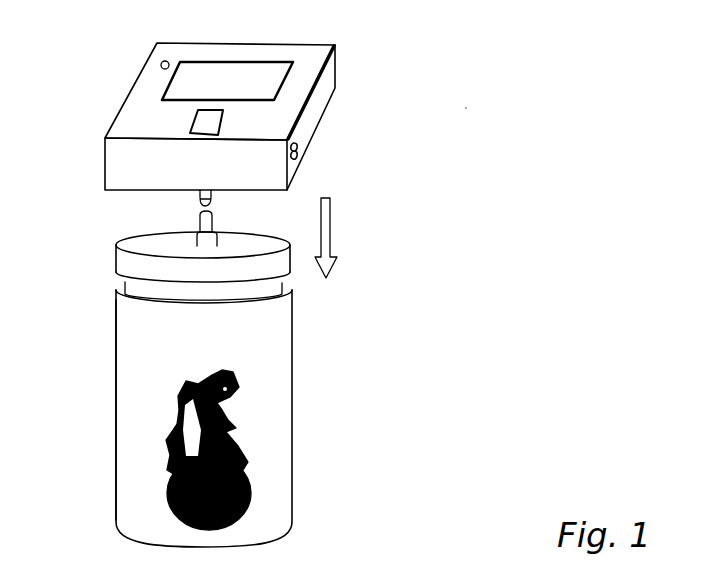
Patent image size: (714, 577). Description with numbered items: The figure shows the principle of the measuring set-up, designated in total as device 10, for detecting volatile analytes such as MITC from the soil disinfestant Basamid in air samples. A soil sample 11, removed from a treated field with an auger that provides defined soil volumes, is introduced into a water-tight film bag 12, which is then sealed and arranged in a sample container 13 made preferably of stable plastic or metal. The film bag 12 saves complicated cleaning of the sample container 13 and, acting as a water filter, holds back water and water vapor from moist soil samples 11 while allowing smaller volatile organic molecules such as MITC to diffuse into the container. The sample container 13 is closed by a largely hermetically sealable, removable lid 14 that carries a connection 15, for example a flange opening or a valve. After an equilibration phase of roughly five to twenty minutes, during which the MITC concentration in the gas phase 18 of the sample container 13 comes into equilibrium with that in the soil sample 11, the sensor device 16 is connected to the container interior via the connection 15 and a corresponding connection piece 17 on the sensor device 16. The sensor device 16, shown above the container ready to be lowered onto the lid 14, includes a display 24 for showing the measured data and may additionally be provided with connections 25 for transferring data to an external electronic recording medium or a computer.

The device for the detection of volatile analytes 10 is at (467, 106).
The soil sample 11 is at (250, 502).
The film bag 12 is at (232, 450).
The sample container 13 is at (292, 368).
The lid 14 is at (127, 263).
The connection 15 is at (212, 222).
The sensor device 16 is at (135, 110).
The connection piece 17 is at (198, 202).
The gas phase 18 is at (135, 337).
The display 24 is at (247, 72).
The connections for transferring data 25 is at (302, 151).